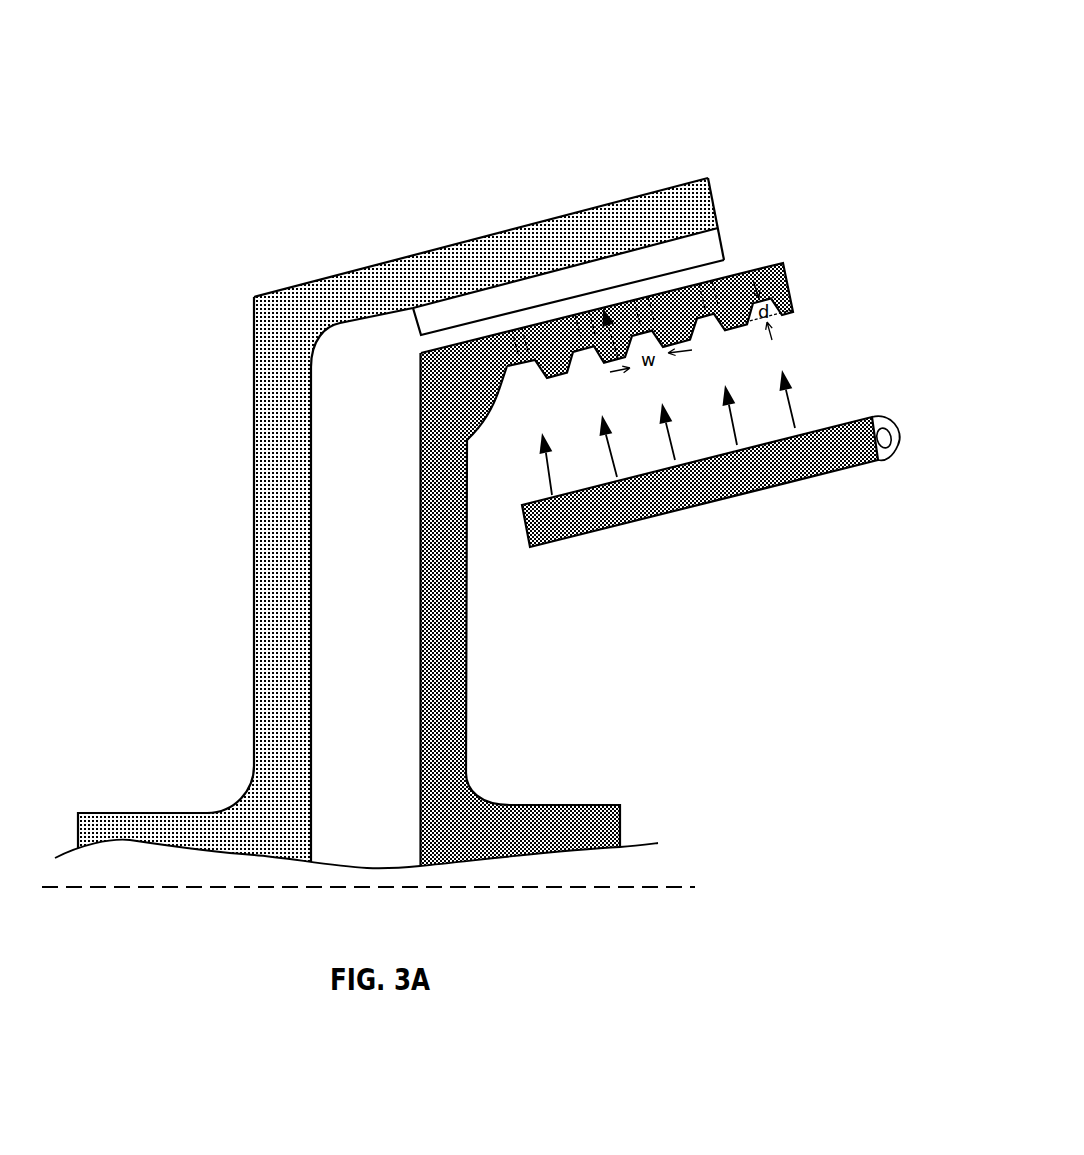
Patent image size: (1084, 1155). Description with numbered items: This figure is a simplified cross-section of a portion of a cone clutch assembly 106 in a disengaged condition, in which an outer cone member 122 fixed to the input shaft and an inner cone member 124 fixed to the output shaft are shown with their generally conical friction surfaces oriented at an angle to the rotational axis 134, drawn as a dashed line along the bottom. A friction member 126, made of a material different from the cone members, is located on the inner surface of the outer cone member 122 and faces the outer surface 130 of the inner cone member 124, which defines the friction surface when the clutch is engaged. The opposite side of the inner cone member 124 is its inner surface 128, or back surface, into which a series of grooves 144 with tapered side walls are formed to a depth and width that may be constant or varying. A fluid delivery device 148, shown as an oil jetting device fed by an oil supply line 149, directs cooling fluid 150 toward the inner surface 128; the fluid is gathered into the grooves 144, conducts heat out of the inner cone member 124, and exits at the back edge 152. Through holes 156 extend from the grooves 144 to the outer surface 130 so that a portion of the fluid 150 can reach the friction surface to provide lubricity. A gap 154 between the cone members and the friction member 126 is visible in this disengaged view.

The cone clutch assembly 106 is at (788, 62).
The outer cone member 122 is at (436, 260).
The inner cone member 124 is at (468, 665).
The friction member 126 is at (719, 236).
The inner surface 128 is at (800, 345).
The outer surface 130 is at (590, 306).
The axis 134 is at (395, 890).
The groove 144 is at (524, 398).
The fluid delivery device 148 is at (660, 518).
The oil supply line 149 is at (897, 418).
The cooling fluid 150 is at (668, 432).
The back edge 152 is at (787, 267).
The slot 154 is at (420, 358).
The through hole 156 is at (703, 290).